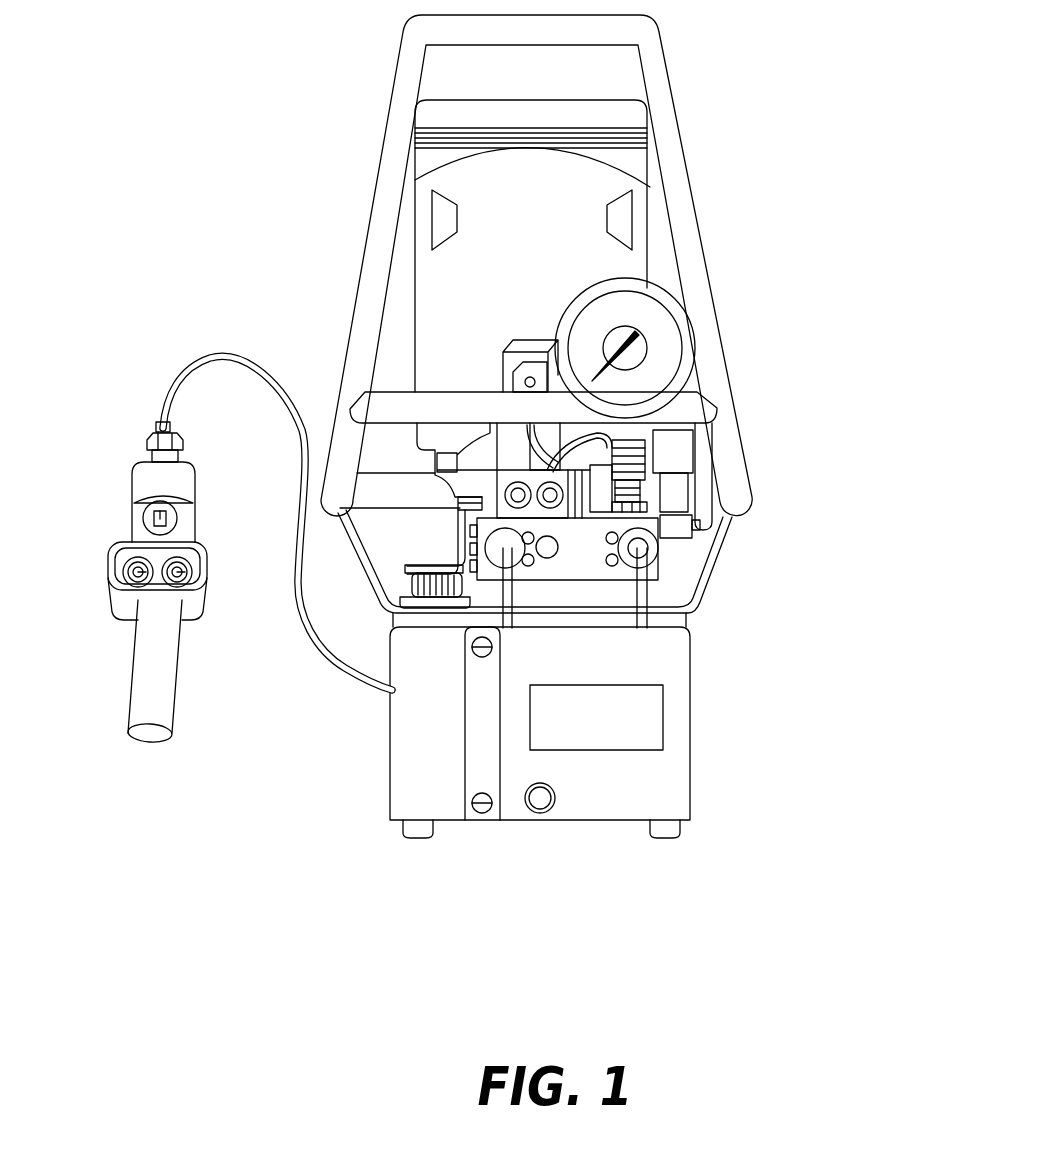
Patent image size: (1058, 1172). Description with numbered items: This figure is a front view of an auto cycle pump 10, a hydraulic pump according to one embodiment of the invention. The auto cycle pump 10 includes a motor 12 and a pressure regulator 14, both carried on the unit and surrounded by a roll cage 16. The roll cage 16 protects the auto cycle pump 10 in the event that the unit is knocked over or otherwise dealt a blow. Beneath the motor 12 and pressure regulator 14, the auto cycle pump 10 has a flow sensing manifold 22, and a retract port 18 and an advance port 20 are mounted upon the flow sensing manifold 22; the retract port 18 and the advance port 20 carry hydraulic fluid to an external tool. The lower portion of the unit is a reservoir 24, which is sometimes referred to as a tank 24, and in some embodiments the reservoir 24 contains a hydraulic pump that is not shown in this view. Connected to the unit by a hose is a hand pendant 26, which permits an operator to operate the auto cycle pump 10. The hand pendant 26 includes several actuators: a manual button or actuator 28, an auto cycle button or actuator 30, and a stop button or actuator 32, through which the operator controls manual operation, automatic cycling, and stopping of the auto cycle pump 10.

The auto cycle pump 10 is at (297, 136).
The motor 12 is at (580, 175).
The pressure regulator 14 is at (684, 446).
The roll cage 16 is at (678, 447).
The retract port 18 is at (510, 527).
The advance port 20 is at (657, 543).
The flow sensing manifold 22 is at (597, 595).
The reservoir 24 is at (597, 657).
The hand pendant 26 is at (196, 596).
The manual button 28 is at (146, 574).
The auto cycle button 30 is at (182, 573).
The stop button 32 is at (172, 520).